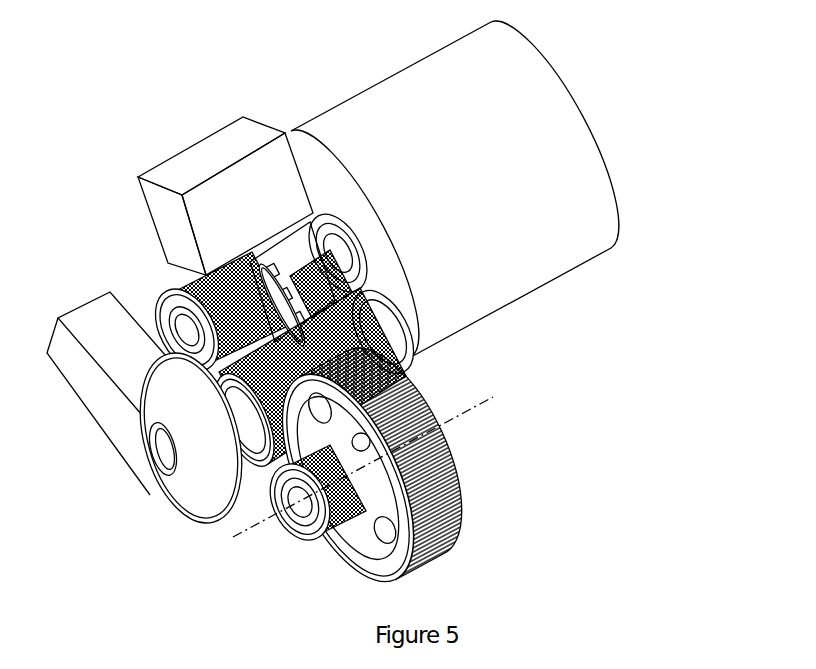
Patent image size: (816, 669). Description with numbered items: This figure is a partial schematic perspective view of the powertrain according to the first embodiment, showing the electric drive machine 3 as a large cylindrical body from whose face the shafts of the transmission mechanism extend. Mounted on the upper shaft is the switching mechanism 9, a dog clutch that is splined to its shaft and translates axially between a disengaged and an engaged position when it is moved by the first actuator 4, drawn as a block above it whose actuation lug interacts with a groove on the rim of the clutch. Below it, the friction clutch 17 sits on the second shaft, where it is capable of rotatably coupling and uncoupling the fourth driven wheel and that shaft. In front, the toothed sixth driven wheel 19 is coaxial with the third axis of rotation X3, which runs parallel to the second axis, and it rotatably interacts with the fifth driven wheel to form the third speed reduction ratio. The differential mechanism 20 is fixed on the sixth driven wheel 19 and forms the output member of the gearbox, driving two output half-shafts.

The electric drive machine 3 is at (365, 77).
The first actuator 4 is at (185, 141).
The switching mechanism 9 is at (200, 287).
The friction clutch 17 is at (224, 426).
The sixth driven wheel 19 is at (462, 478).
The differential mechanism 20 is at (331, 539).
The third axis of rotation X3 is at (383, 458).